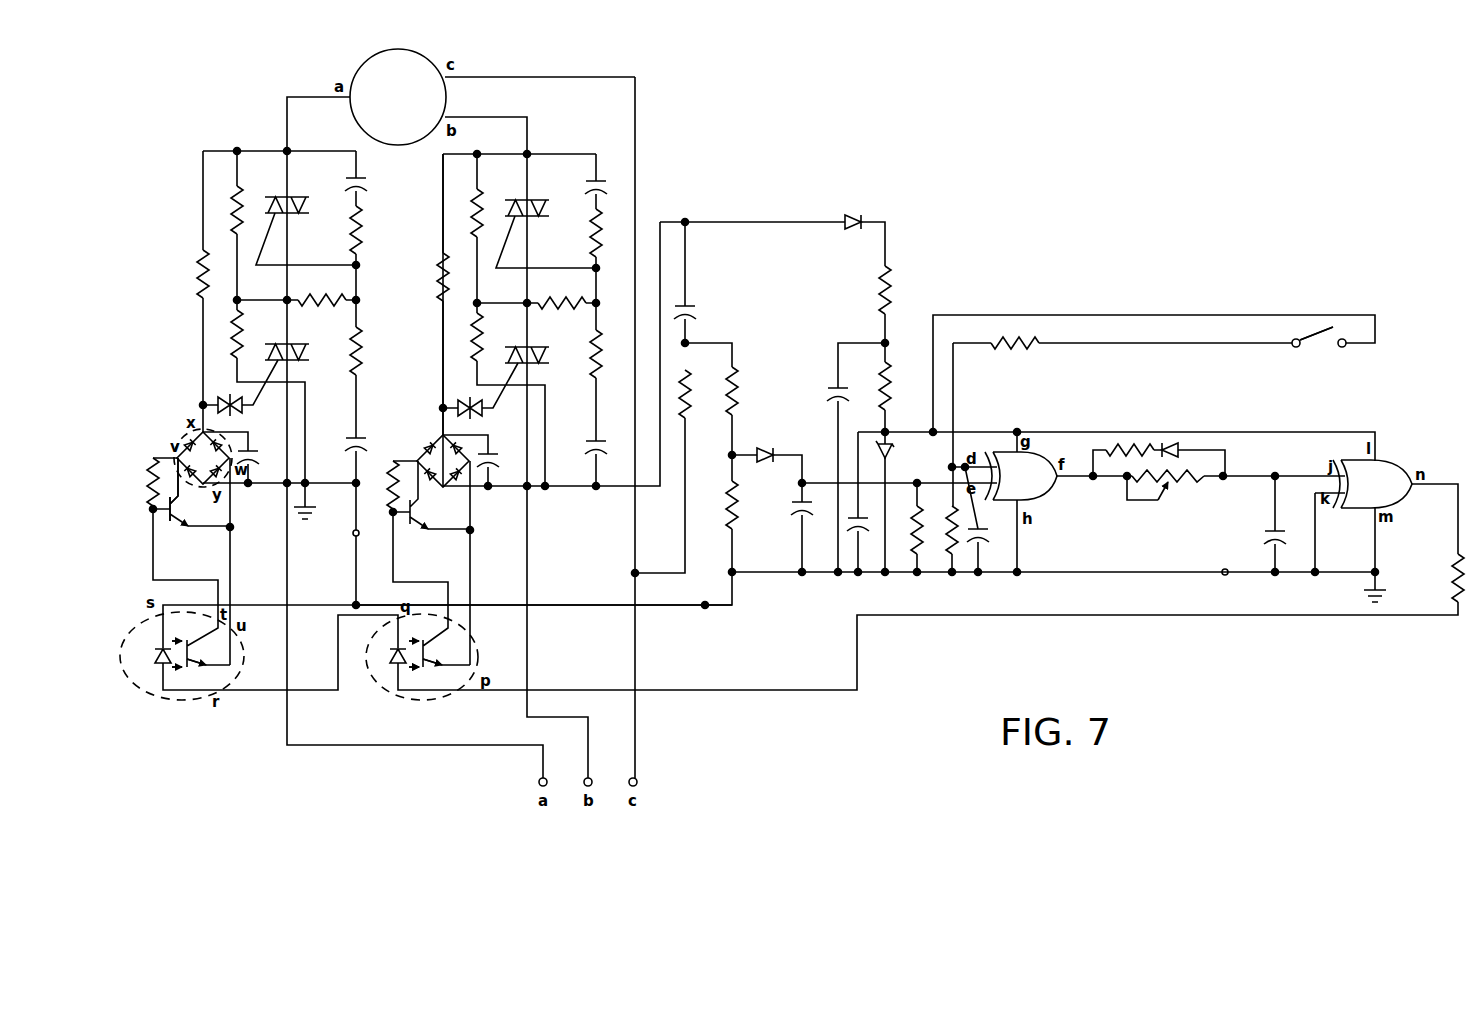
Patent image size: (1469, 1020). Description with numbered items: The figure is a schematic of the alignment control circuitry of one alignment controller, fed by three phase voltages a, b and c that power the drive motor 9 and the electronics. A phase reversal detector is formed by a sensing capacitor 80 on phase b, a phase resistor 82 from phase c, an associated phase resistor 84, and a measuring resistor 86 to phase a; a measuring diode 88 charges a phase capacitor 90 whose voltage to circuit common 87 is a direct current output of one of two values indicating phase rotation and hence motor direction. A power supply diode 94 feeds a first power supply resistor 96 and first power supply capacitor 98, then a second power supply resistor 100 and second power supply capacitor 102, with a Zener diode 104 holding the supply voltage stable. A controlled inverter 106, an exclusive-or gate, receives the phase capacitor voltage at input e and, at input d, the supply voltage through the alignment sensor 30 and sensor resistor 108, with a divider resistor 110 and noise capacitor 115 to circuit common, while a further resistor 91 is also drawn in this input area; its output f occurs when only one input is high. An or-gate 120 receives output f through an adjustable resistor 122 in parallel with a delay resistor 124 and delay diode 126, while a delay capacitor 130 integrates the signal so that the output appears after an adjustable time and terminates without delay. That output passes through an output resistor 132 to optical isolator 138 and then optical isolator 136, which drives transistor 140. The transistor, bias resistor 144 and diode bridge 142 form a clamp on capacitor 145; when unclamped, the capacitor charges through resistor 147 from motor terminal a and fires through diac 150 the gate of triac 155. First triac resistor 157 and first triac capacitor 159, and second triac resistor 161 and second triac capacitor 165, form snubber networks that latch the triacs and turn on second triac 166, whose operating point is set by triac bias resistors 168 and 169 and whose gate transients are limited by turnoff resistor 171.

The drive motor 9 is at (432, 63).
The alignment sensor 30 is at (1320, 348).
The sensing capacitor 80 is at (692, 305).
The phase resistor 82 is at (688, 412).
The associated phase resistor 84 is at (740, 380).
The measuring resistor 86 is at (739, 514).
The circuit common 87 is at (352, 534).
The measuring diode 88 is at (746, 450).
The phase capacitor 90 is at (804, 520).
The resistor 91 is at (916, 568).
The power supply diode 94 is at (852, 214).
The first power supply resistor 96 is at (884, 300).
The first power supply capacitor 98 is at (836, 393).
The second power supply resistor 100 is at (890, 376).
The second power supply capacitor 102 is at (855, 518).
The Zener diode 104 is at (890, 451).
The controlled inverter 106 is at (997, 445).
The sensor resistor 108 is at (1016, 355).
The divider resistor 110 is at (951, 568).
The noise capacitor 115 is at (990, 533).
The or-gate 120 is at (1404, 470).
The adjustable resistor 122 is at (1186, 483).
The delay resistor 124 is at (1134, 446).
The delay diode 126 is at (1176, 443).
The delay capacitor 130 is at (1272, 531).
The output resistor 132 is at (1454, 580).
The optical isolator 136 is at (152, 694).
The optical isolator 138 is at (420, 702).
The transistor 140 is at (175, 523).
The diode bridge 142 is at (180, 436).
The bias resistor 144 is at (150, 468).
The capacitor 145 is at (256, 450).
The resistor 147 is at (200, 294).
The diac 150 is at (219, 402).
The triac 155 is at (286, 343).
The first triac resistor 157 is at (360, 356).
The first triac capacitor 159 is at (360, 437).
The second triac resistor 161 is at (360, 236).
The second triac capacitor 165 is at (361, 184).
The second triac 166 is at (281, 197).
The triac bias resistor 168 is at (235, 220).
The triac bias resistor 169 is at (235, 342).
The turnoff resistor 171 is at (340, 299).